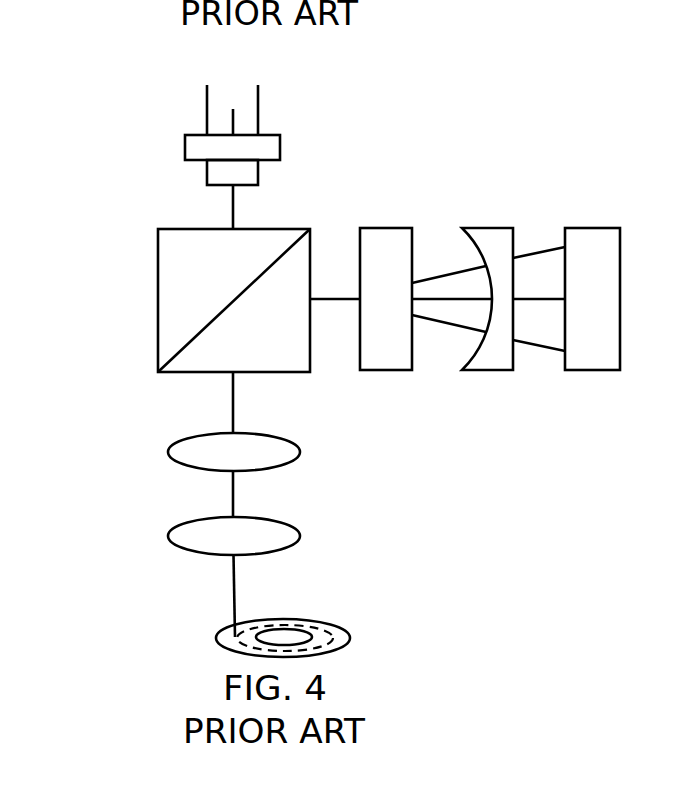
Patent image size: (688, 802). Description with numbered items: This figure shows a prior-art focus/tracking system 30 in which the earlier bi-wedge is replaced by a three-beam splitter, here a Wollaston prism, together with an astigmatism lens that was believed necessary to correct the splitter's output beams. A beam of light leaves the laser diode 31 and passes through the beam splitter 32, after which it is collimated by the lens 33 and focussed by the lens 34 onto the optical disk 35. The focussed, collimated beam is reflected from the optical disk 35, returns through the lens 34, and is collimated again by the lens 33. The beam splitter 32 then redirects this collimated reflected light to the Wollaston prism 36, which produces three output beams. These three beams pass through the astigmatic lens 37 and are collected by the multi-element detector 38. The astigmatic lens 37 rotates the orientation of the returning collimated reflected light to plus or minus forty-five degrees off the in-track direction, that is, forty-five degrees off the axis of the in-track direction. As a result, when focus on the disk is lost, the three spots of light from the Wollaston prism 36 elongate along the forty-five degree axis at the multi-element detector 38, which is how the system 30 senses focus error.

The focus/tracking system 30 is at (166, 89).
The laser diode 31 is at (185, 136).
The beam splitter 32 is at (158, 229).
The lens 33 is at (170, 455).
The lens 34 is at (170, 540).
The optical disk 35 is at (222, 633).
The Wollaston prism 36 is at (387, 228).
The astigmatic lens 37 is at (490, 228).
The multi-element detector 38 is at (590, 228).